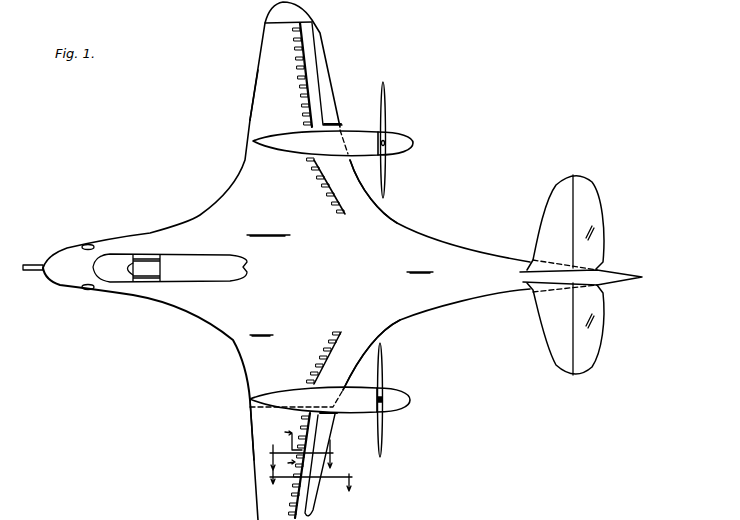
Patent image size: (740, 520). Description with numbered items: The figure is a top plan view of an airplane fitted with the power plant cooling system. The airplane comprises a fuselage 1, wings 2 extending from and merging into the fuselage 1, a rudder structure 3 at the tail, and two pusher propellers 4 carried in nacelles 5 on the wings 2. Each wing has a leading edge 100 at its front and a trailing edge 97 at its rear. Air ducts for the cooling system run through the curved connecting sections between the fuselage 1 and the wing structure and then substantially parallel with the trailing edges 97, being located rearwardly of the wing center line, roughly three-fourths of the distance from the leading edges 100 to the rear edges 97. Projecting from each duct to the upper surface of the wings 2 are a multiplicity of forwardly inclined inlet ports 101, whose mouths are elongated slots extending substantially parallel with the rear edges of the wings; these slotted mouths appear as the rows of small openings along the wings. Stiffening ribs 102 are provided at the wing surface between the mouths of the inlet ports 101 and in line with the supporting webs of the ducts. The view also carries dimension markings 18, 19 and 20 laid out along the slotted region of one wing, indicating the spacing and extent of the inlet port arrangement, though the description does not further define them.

The fuselage 1 is at (276, 260).
The wings 2 is at (263, 82).
The rudder structure 3 is at (630, 255).
The pusher propellers 4 is at (387, 117).
The nacelles 5 is at (355, 132).
The flap span dimension 18 is at (310, 455).
The flap span dimension 19 is at (310, 484).
The slot spacing dimension 20 is at (284, 447).
The trailing edges 97 is at (357, 170).
The leading edges 100 is at (262, 58).
The inlet ports 101 is at (300, 50).
The stiffening ribs 102 is at (237, 114).